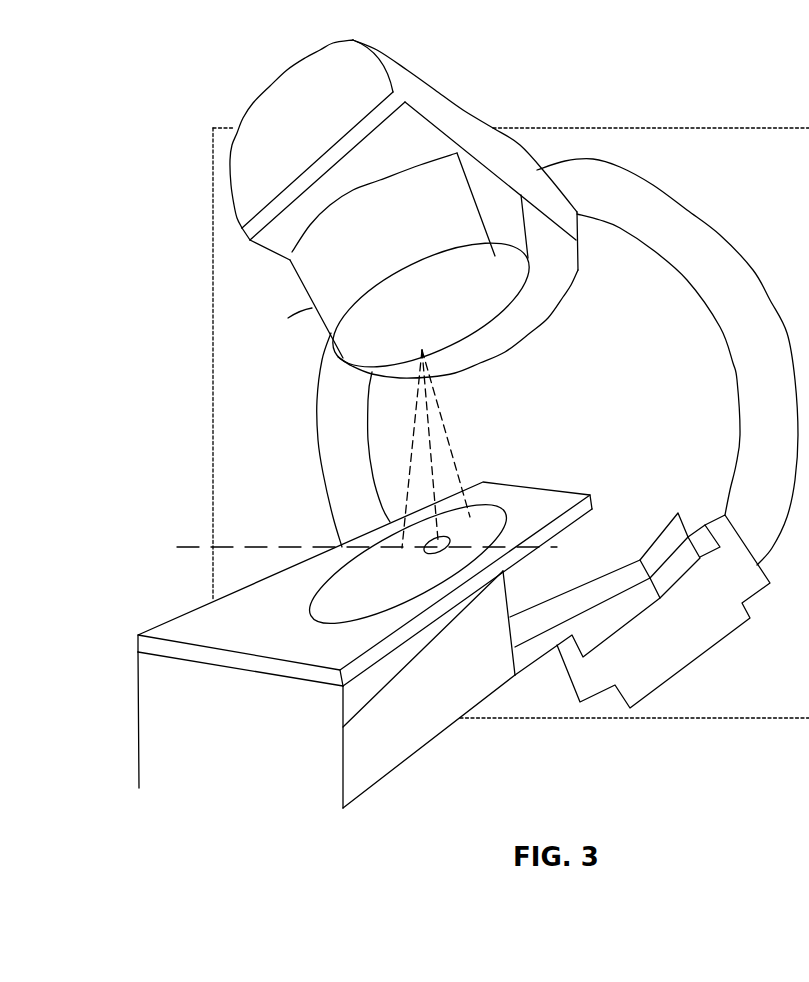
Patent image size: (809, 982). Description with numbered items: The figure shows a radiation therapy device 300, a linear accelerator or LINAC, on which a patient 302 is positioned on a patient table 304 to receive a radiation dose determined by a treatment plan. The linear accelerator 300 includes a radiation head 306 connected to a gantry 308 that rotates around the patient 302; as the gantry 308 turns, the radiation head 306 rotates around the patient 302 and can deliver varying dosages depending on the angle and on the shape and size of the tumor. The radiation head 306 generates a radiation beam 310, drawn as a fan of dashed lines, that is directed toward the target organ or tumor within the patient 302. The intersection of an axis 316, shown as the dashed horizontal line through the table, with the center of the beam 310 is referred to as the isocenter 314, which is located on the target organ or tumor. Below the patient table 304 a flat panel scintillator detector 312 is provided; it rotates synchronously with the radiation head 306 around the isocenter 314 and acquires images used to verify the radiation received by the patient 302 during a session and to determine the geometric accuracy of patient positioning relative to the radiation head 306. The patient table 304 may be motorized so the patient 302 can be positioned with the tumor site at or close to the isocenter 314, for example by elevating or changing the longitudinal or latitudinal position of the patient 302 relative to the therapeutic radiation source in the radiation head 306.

The radiation therapy device 300 is at (703, 84).
The patient 302 is at (343, 577).
The patient table 304 is at (562, 501).
The radiation head 306 is at (312, 306).
The gantry 308 is at (720, 232).
The radiation beam 310 is at (437, 444).
The flat panel scintillator detector 312 is at (640, 541).
The isocenter 314 is at (426, 552).
The axis 316 is at (193, 547).